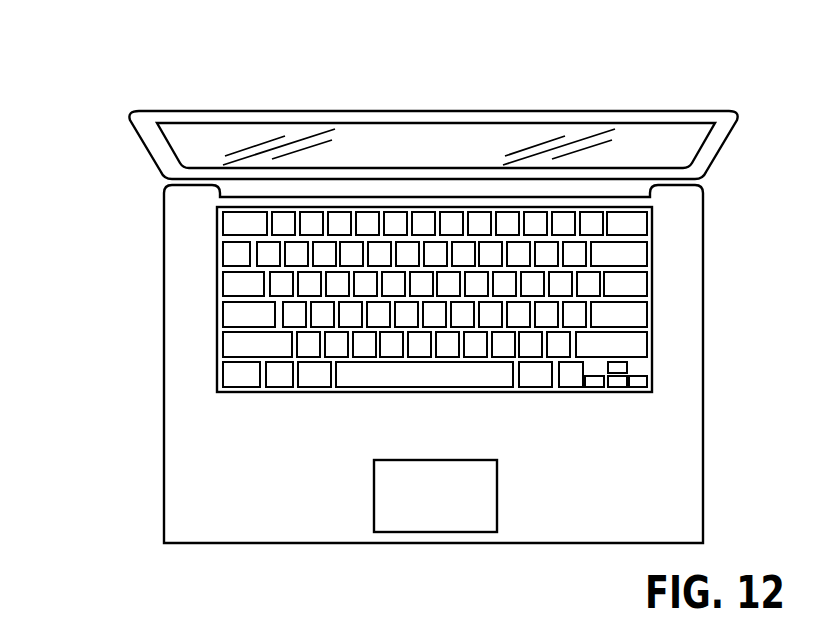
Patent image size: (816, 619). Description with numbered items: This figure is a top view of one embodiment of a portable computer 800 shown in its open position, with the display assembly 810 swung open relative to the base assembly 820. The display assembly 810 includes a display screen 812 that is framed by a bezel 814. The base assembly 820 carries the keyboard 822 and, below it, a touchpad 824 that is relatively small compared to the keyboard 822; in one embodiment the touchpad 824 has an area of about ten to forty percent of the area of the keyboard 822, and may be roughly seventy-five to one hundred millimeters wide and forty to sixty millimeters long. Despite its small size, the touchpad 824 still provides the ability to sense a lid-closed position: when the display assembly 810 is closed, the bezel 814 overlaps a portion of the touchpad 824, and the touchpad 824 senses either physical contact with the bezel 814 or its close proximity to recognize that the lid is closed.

The portable computer 800 is at (128, 70).
The display assembly 810 is at (115, 138).
The display screen 812 is at (463, 147).
The bezel 814 is at (687, 117).
The base housing 820 is at (138, 424).
The keyboard 822 is at (640, 250).
The touchpad 824 is at (407, 512).